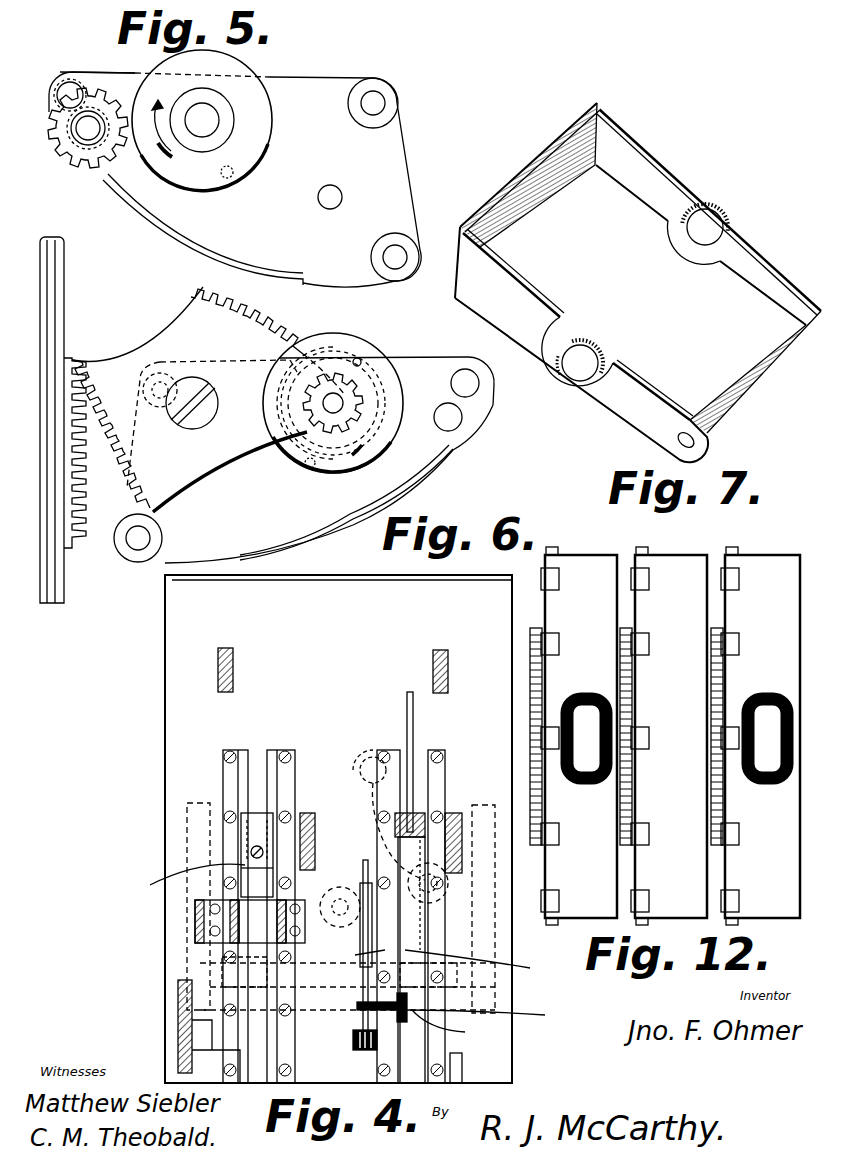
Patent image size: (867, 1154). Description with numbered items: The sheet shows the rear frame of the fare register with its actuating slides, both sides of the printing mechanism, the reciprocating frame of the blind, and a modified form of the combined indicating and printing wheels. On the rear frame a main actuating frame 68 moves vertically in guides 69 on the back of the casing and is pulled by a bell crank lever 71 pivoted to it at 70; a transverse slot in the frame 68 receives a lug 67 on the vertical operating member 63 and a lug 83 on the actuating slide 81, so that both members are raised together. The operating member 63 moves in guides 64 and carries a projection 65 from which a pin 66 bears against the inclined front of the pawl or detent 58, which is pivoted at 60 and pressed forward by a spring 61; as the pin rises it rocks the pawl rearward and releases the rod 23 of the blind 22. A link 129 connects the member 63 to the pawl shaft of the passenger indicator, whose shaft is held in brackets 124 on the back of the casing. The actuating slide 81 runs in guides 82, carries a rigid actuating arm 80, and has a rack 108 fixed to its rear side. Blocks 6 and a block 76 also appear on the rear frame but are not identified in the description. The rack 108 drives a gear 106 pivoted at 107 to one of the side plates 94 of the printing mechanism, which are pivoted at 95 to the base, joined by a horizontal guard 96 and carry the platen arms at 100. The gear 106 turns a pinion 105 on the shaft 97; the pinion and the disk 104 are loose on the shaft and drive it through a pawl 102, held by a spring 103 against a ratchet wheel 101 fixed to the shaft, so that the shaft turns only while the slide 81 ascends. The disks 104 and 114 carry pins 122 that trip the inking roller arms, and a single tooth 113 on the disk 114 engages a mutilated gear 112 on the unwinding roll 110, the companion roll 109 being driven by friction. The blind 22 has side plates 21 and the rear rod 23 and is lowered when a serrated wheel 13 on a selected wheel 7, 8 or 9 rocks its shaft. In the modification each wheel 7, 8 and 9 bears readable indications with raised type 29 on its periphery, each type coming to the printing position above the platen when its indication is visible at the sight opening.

In FIG. 4, the frame bar 6 is at (316, 825).
In FIG. 12, the indicator wheel 7 is at (755, 560).
In FIG. 12, the indicator wheel 8 is at (668, 560).
In FIG. 12, the indicator wheel 9 is at (580, 560).
In FIG. 12, the serrated wheel 13 is at (536, 846).
In FIG. 7, the side plate of the blind 21 is at (760, 245).
In FIG. 7, the blind 22 is at (533, 207).
In FIG. 7, the rod 23 is at (747, 365).
In FIG. 12, the printing type 29 is at (549, 568).
In FIG. 4, the pawl or detent 58 is at (358, 860).
In FIG. 4, the pivot of pawl 60 is at (360, 1052).
In FIG. 4, the spring 61 is at (357, 956).
In FIG. 4, the vertical operating member 63 is at (479, 964).
In FIG. 4, the guides 64 is at (430, 752).
In FIG. 4, the projection 65 is at (450, 1026).
In FIG. 4, the pin 66 is at (358, 1010).
In FIG. 4, the lug 67 is at (487, 1014).
In FIG. 4, the main actuating frame 68 is at (348, 943).
In FIG. 4, the guides 69 is at (198, 803).
In FIG. 4, the pivot 70 is at (365, 900).
In FIG. 4, the bell crank lever 71 is at (362, 790).
In FIG. 4, the clamp block 76 is at (195, 920).
In FIG. 4, the actuating arm 80 is at (182, 881).
In FIG. 6, the actuating slide 81 is at (63, 293).
In FIG. 4, the actuating slide 81 is at (258, 822).
In FIG. 4, the guides 82 is at (240, 752).
In FIG. 4, the lug 83 is at (258, 972).
In FIG. 5, the side plates 94 is at (235, 179).
In FIG. 6, the side plates 94 is at (323, 460).
In FIG. 5, the pivot of side plates 95 is at (393, 257).
In FIG. 6, the pivot of side plates 95 is at (130, 545).
In FIG. 4, the pivot of side plates 95 is at (462, 1065).
In FIG. 5, the horizontal guard 96 is at (238, 264).
In FIG. 6, the horizontal guard 96 is at (262, 558).
In FIG. 5, the shaft 97 is at (205, 120).
In FIG. 6, the shaft 97 is at (338, 403).
In FIG. 5, the pivot of platen arms 100 is at (375, 103).
In FIG. 6, the ratchet wheel 101 is at (352, 393).
In FIG. 6, the pawl 102 is at (357, 358).
In FIG. 6, the spring 103 is at (313, 360).
In FIG. 6, the disk 104 is at (386, 437).
In FIG. 6, the pinion 105 is at (338, 425).
In FIG. 6, the gear 106 is at (208, 397).
In FIG. 6, the pivot of gear 107 is at (191, 420).
In FIG. 6, the rack 108 is at (74, 358).
In FIG. 4, the rack 108 is at (178, 1000).
In FIG. 5, the unwinding roll 109 is at (70, 92).
In FIG. 6, the unwinding roll 109 is at (467, 385).
In FIG. 5, the unwinding roll 110 is at (85, 130).
In FIG. 6, the unwinding roll 110 is at (450, 420).
In FIG. 5, the mutilated gear 112 is at (90, 166).
In FIG. 5, the single tooth 113 is at (148, 160).
In FIG. 5, the disk 114 is at (206, 172).
In FIG. 5, the pins 122 is at (233, 177).
In FIG. 6, the pins 122 is at (308, 467).
In FIG. 4, the brackets 124 is at (235, 666).
In FIG. 4, the link 129 is at (407, 718).